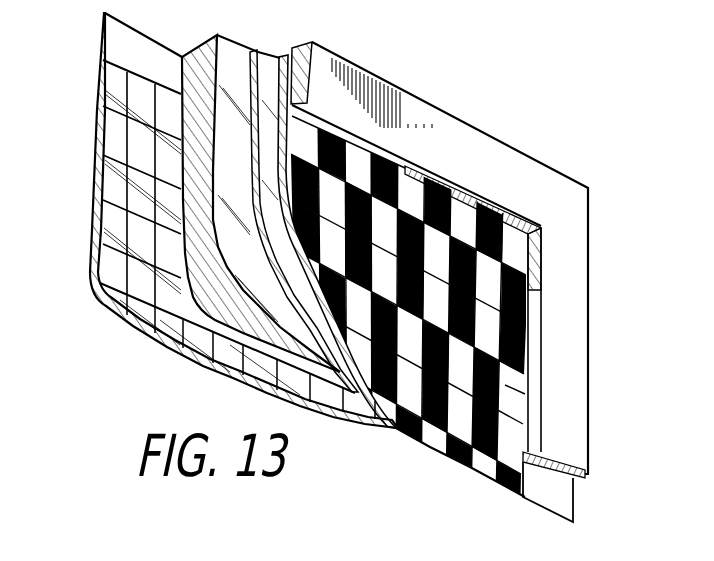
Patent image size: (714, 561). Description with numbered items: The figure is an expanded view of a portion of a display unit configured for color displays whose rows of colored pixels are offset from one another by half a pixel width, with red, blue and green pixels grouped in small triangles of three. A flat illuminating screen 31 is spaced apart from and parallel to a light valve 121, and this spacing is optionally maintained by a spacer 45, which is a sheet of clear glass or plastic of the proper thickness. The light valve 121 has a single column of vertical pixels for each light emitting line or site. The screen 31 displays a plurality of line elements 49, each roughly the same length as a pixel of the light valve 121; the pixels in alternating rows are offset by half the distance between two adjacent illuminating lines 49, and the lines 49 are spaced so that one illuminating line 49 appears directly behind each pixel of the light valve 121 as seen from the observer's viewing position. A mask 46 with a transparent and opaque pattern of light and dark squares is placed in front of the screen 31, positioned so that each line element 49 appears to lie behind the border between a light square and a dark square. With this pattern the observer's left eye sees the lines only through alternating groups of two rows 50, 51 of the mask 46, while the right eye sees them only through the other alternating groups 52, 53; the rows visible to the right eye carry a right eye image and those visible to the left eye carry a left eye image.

The flat illuminating screen 31 is at (145, 34).
The light valve 121 is at (268, 130).
The spacer 45 is at (497, 160).
The mask 46 is at (508, 433).
The line elements 49 is at (110, 280).
The row of mask 50 is at (510, 250).
The row of mask 51 is at (528, 298).
The row of mask 52 is at (520, 337).
The row of mask 53 is at (512, 388).